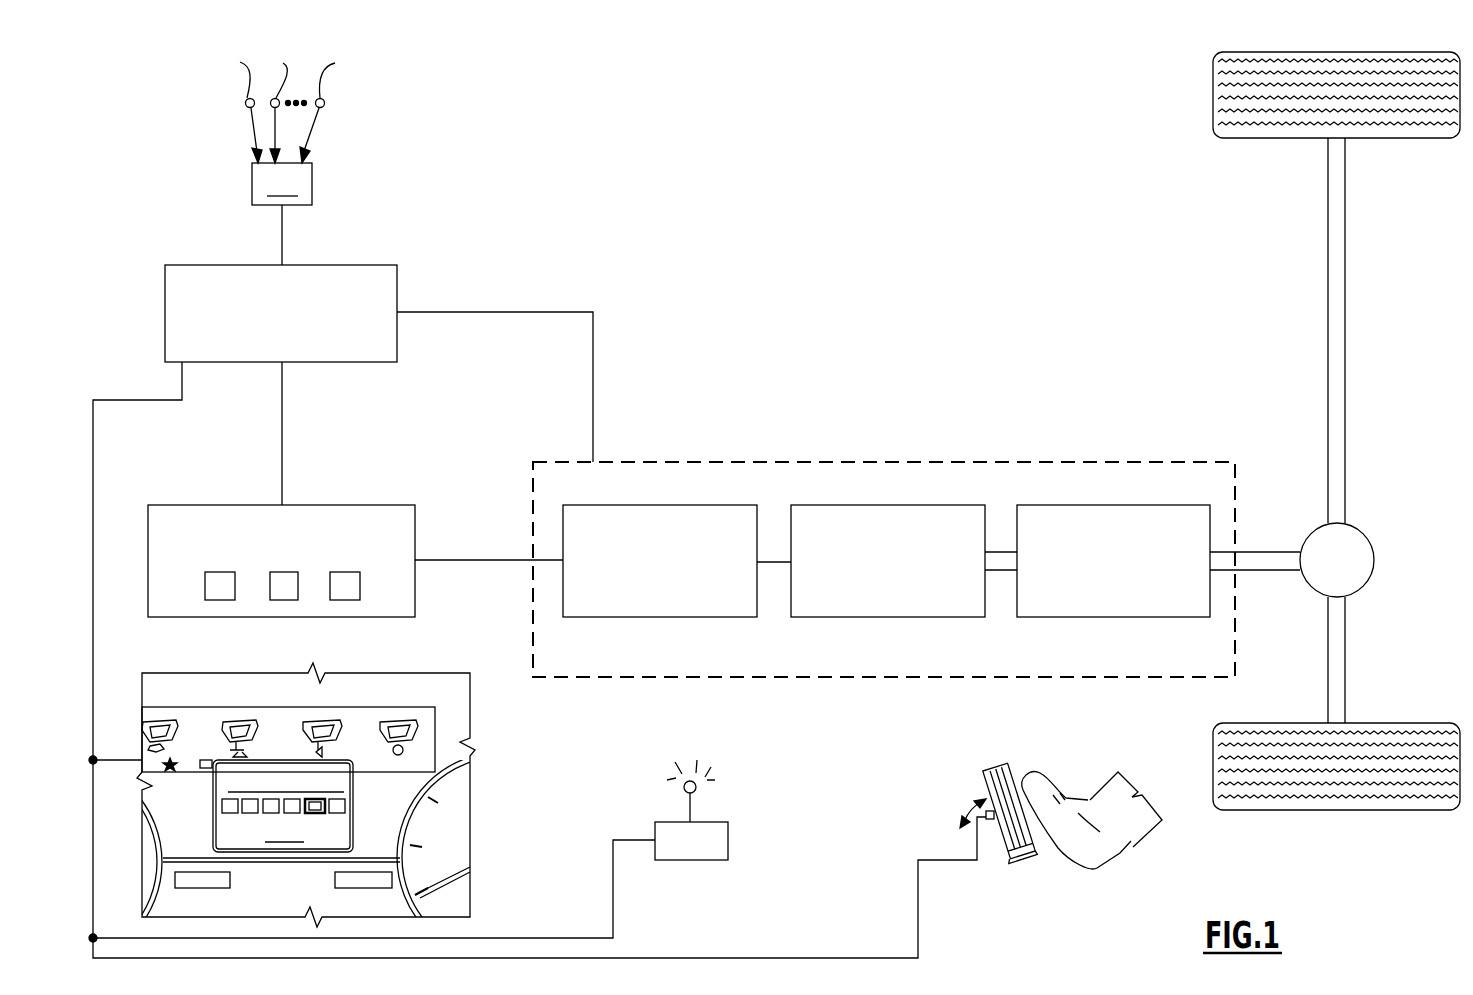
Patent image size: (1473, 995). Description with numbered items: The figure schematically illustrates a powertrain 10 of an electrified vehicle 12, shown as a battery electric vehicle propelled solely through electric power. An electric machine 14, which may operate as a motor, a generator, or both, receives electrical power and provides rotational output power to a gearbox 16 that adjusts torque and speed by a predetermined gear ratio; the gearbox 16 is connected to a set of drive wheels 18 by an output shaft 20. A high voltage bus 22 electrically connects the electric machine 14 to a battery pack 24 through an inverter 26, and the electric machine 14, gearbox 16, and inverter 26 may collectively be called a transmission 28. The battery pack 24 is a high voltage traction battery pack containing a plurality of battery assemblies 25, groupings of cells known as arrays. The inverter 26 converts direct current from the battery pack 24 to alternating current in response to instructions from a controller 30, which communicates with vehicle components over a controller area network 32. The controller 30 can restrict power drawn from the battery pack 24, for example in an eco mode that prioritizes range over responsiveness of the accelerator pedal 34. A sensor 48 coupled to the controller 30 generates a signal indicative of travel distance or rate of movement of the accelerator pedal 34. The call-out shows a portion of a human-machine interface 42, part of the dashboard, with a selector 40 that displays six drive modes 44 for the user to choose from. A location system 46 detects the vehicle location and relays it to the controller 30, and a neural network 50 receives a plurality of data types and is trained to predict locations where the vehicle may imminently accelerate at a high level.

The powertrain 10 is at (884, 561).
The electrified vehicle 12 is at (1316, 458).
The electric machine 14 is at (887, 617).
The gearbox 16 is at (1110, 617).
The drive wheels 18 is at (1350, 810).
The output shaft 20 is at (1253, 572).
The high voltage bus 22 is at (443, 555).
The battery pack 24 is at (281, 561).
The battery assemblies 25 is at (275, 600).
The inverter 26 is at (657, 617).
The transmission 28 is at (735, 677).
The controller 30 is at (397, 290).
The controller area network 32 is at (279, 443).
The accelerator pedal 34 is at (1006, 776).
The selector 40 is at (292, 806).
The human-machine interface 42 is at (303, 814).
The drive modes 44 is at (345, 796).
The location system 46 is at (728, 838).
The sensor 48 is at (993, 819).
The neural network 50 is at (312, 190).